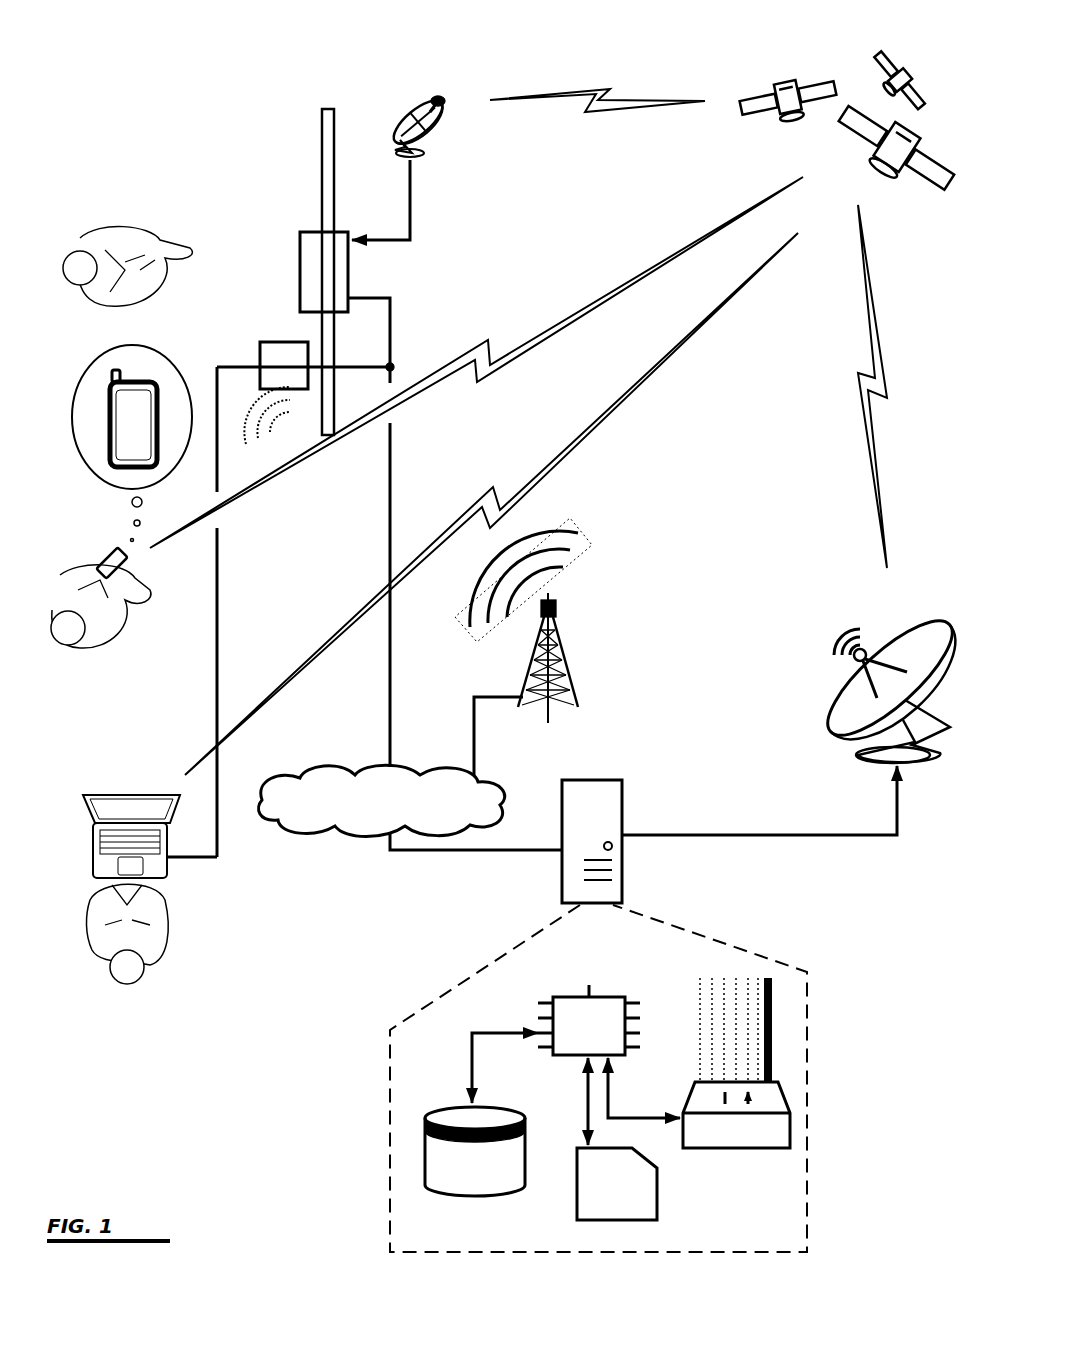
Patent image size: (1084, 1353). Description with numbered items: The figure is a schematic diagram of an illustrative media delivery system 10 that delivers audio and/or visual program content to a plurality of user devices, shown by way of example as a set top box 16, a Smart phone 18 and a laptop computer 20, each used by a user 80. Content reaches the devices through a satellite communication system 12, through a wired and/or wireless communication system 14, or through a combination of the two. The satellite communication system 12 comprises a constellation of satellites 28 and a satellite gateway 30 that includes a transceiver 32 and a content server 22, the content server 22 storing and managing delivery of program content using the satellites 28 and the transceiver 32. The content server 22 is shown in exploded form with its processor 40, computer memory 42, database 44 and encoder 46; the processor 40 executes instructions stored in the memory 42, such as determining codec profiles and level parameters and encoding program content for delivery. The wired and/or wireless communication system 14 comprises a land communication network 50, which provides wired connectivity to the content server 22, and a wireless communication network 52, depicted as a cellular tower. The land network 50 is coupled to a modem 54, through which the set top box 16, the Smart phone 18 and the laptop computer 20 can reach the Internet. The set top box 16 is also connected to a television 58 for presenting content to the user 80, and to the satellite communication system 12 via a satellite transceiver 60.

The media delivery system 10 is at (318, 1170).
The satellite communication system 12 is at (817, 293).
The wired and/or wireless communication system 14 is at (498, 670).
The set top box 16 is at (300, 258).
The Smart phone 18 is at (132, 443).
The laptop computer 20 is at (93, 848).
The content server 22 is at (592, 841).
The satellites 28 is at (750, 83).
The satellite gateway 30 is at (664, 786).
The transceiver 32 is at (917, 630).
The processor 40 is at (576, 1065).
The computer memory 42 is at (617, 1184).
The database 44 is at (475, 1151).
The encoder 46 is at (736, 1063).
The land communication network 50 is at (382, 800).
The wireless communication network 52 is at (560, 672).
The modem 54 is at (276, 393).
The television 58 is at (322, 181).
The satellite transceiver 60 is at (440, 144).
The user 80 is at (80, 240).